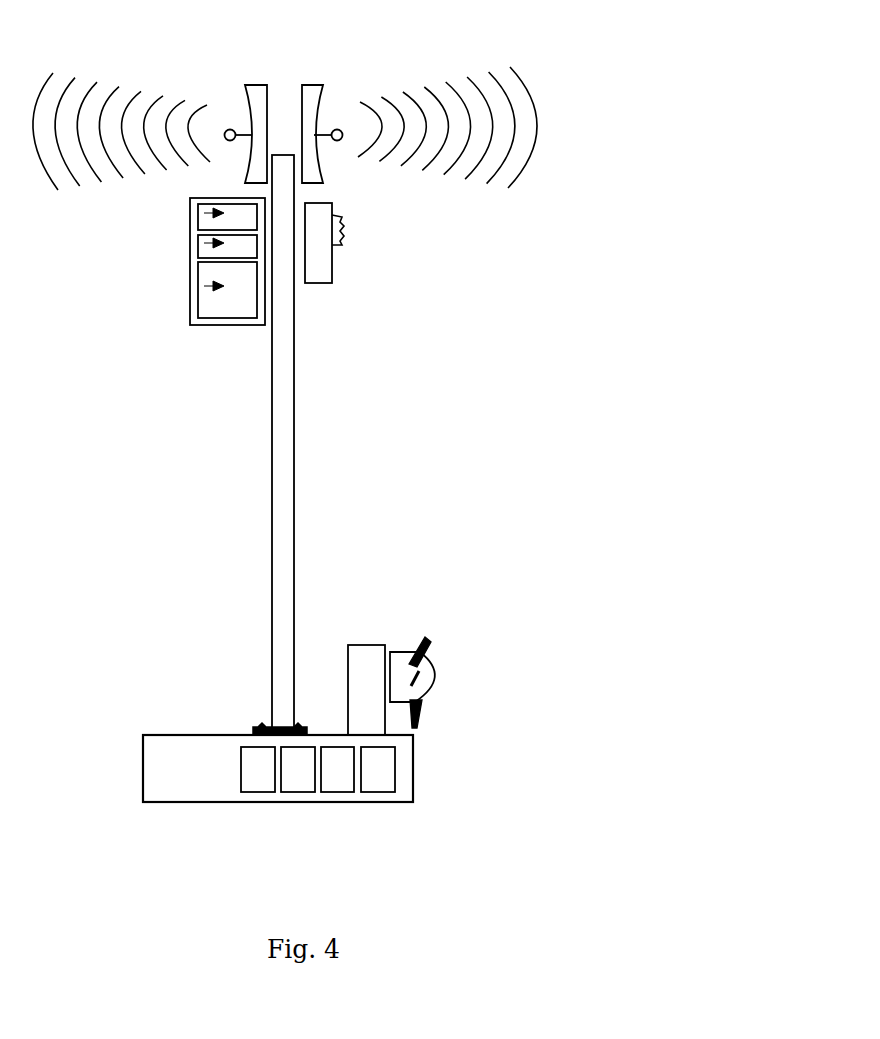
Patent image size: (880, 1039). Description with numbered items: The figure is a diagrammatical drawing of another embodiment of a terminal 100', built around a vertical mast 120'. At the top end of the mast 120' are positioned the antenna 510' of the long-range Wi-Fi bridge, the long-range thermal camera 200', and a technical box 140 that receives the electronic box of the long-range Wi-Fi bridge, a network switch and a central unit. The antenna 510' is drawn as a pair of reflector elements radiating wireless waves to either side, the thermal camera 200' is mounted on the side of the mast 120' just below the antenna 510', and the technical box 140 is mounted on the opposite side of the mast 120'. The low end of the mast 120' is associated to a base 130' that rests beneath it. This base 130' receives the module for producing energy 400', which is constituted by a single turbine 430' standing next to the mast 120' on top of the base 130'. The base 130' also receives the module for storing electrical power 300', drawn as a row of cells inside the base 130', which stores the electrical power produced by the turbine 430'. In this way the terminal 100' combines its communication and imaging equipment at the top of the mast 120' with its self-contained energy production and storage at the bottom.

The terminal 100' is at (287, 452).
The antenna of the long-range Wi-Fi bridge 510' is at (285, 98).
The mast 120' is at (328, 445).
The technical box 140 is at (192, 328).
The long-range thermal camera 200' is at (372, 255).
The module for producing energy 400' is at (455, 638).
The turbine 430' is at (476, 670).
The base 130' is at (325, 817).
The module for storing electrical power 300' is at (256, 823).